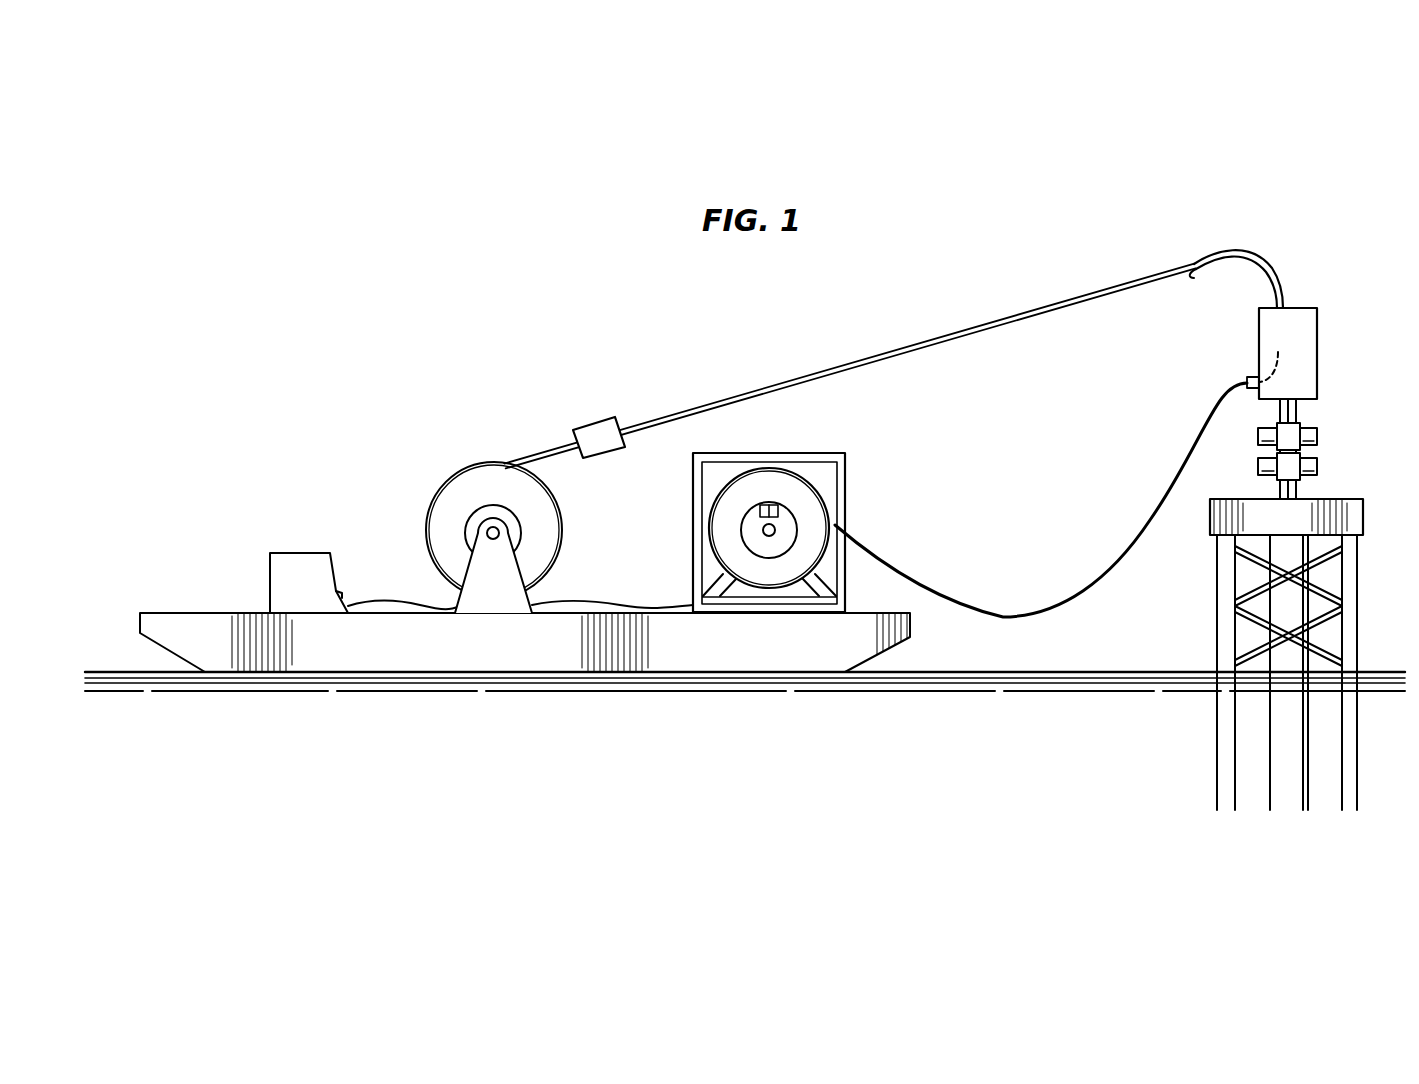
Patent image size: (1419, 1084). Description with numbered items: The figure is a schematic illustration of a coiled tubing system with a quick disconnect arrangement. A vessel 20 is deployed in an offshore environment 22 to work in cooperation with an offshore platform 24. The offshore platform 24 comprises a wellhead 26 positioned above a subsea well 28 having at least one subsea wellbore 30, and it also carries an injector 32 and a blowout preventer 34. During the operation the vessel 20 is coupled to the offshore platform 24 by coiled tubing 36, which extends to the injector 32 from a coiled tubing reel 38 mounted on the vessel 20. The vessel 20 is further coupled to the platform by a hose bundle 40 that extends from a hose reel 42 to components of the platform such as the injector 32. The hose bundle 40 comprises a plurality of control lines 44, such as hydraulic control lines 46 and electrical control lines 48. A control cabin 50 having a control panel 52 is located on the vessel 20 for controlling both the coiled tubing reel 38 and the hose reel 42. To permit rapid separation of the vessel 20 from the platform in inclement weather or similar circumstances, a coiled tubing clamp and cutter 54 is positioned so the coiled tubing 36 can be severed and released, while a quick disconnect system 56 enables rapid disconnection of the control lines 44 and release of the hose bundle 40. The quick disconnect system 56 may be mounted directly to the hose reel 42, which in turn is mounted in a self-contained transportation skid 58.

The vessel 20 is at (418, 656).
The offshore environment 22 is at (1100, 652).
The offshore platform 24 is at (1340, 499).
The wellhead 26 is at (1303, 384).
The subsea well 28 is at (1278, 735).
The subsea wellbore 30 is at (1282, 800).
The injector 32 is at (1318, 323).
The blowout preventer 34 is at (1328, 443).
The coiled tubing 36 is at (875, 359).
The coiled tubing reel 38 is at (460, 490).
The hose bundle 40 is at (1142, 535).
The hose reel 42 is at (725, 512).
The control lines 44 is at (1273, 348).
The hydraulic control lines 46 is at (1262, 370).
The electrical control lines 48 is at (1283, 372).
The control cabin 50 is at (290, 553).
The control panel 52 is at (335, 567).
The coiled tubing clamp and cutter 54 is at (593, 432).
The quick disconnect system 56 is at (785, 510).
The self-contained transportation skid 58 is at (820, 453).